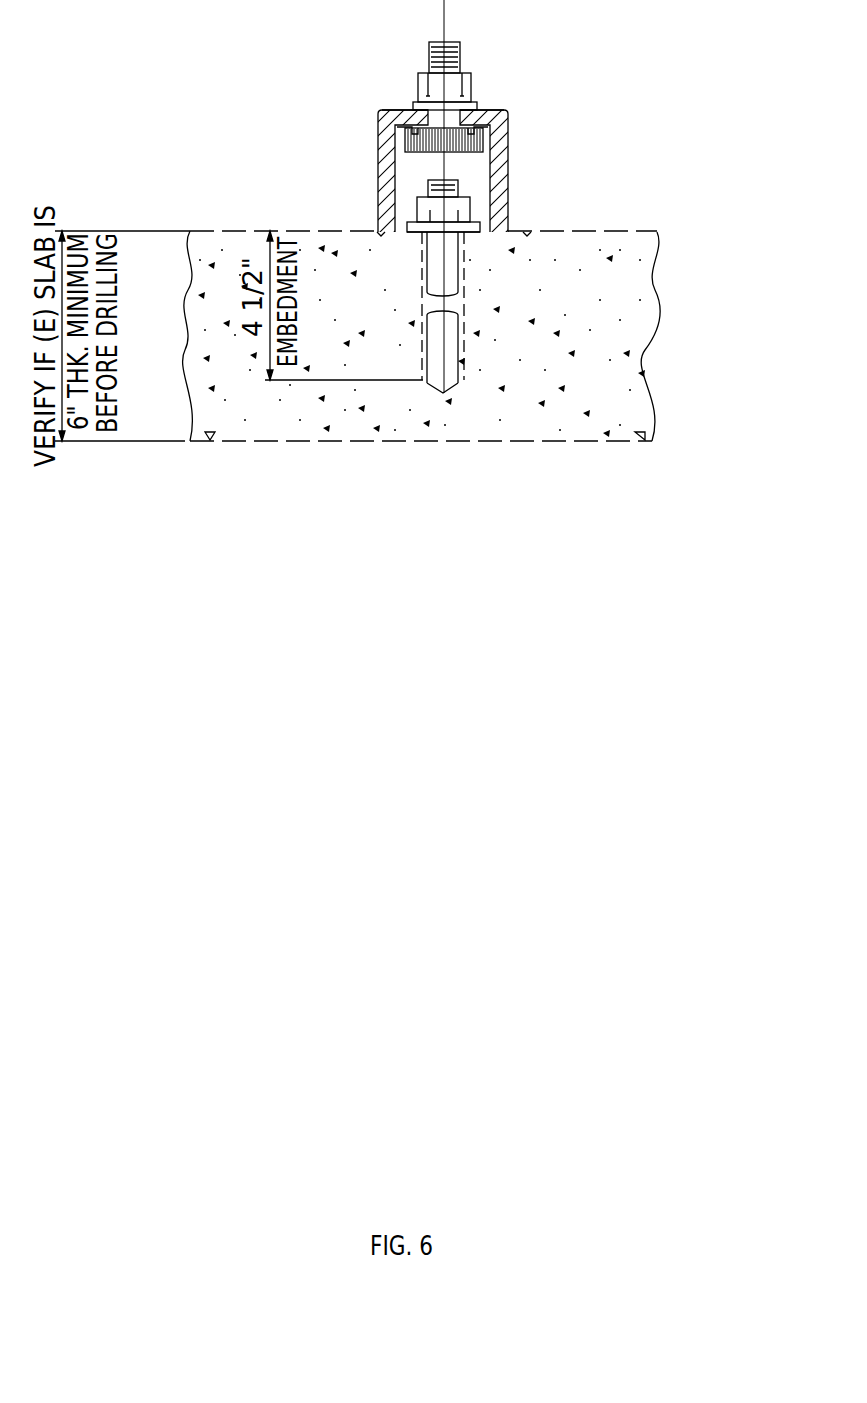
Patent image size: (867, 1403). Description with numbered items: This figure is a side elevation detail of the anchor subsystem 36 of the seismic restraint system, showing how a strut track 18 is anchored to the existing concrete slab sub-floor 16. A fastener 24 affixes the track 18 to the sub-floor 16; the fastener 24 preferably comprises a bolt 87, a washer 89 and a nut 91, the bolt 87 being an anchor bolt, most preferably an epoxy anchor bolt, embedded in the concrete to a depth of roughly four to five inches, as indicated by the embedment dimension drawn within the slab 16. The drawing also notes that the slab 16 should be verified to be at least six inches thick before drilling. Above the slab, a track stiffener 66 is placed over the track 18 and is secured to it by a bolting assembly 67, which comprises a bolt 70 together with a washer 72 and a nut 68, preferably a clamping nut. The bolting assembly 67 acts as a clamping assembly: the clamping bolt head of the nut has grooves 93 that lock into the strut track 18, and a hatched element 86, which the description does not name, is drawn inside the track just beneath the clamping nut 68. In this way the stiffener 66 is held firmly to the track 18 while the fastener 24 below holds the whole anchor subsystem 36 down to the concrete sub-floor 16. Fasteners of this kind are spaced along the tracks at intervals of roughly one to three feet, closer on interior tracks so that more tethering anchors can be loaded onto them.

The concrete slab sub-floor 16 is at (663, 257).
The track 18 is at (468, 207).
The fastener 24 is at (412, 258).
The anchor subsystem 36 is at (323, 96).
The track stiffener 66 is at (495, 118).
The bolting assembly 67 is at (475, 55).
The nut 68 is at (420, 78).
The bolt 70 is at (431, 44).
The washer 72 is at (478, 108).
The spring/load element 86 is at (455, 150).
The bolt 87 is at (427, 264).
The washer 89 is at (473, 231).
The nut 91 is at (478, 222).
The grooves 93 is at (474, 122).